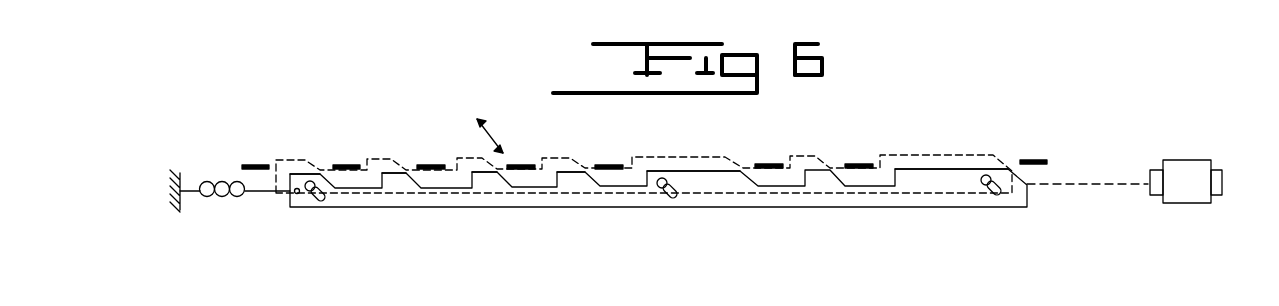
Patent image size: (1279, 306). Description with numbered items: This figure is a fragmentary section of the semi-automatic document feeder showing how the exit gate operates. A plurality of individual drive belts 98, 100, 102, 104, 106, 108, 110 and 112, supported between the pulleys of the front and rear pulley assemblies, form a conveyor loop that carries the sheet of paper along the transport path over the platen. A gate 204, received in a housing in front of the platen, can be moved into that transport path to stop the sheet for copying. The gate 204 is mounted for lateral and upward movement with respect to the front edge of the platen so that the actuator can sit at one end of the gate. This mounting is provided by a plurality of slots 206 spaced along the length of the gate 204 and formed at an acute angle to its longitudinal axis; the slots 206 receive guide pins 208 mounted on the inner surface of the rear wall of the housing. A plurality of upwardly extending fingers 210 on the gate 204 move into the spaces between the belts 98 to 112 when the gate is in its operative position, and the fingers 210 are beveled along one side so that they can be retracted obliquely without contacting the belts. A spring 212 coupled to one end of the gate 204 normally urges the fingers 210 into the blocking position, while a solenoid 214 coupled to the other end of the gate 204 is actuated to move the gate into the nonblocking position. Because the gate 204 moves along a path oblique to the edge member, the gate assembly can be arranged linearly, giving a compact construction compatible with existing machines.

The drive belt 98 is at (250, 165).
The drive belt 100 is at (346, 165).
The drive belt 102 is at (443, 157).
The drive belt 104 is at (528, 165).
The drive belt 106 is at (622, 165).
The drive belt 108 is at (775, 164).
The drive belt 110 is at (866, 164).
The drive belt 112 is at (1034, 160).
The gate 204 is at (518, 208).
The slots 206 is at (323, 201).
The guide pins 208 is at (307, 191).
The fingers 210 is at (298, 174).
The spring 212 is at (221, 197).
The solenoid 214 is at (1180, 165).